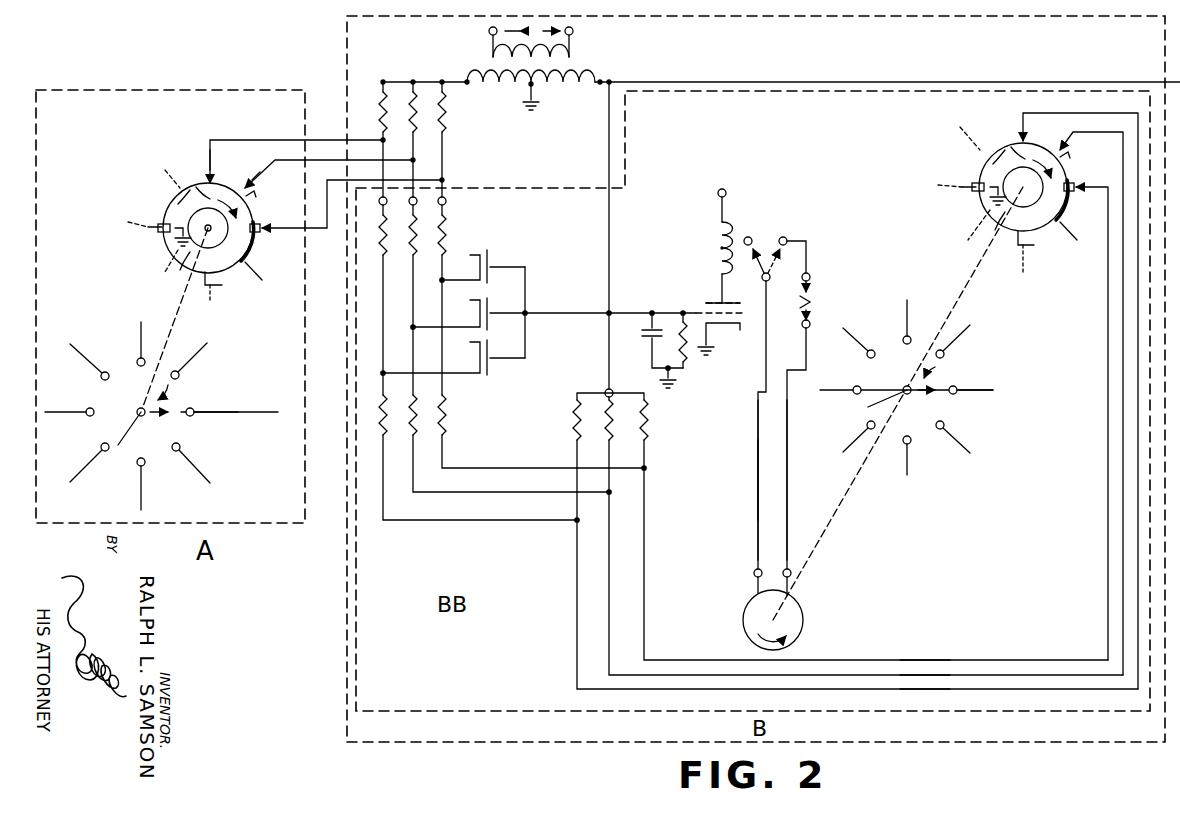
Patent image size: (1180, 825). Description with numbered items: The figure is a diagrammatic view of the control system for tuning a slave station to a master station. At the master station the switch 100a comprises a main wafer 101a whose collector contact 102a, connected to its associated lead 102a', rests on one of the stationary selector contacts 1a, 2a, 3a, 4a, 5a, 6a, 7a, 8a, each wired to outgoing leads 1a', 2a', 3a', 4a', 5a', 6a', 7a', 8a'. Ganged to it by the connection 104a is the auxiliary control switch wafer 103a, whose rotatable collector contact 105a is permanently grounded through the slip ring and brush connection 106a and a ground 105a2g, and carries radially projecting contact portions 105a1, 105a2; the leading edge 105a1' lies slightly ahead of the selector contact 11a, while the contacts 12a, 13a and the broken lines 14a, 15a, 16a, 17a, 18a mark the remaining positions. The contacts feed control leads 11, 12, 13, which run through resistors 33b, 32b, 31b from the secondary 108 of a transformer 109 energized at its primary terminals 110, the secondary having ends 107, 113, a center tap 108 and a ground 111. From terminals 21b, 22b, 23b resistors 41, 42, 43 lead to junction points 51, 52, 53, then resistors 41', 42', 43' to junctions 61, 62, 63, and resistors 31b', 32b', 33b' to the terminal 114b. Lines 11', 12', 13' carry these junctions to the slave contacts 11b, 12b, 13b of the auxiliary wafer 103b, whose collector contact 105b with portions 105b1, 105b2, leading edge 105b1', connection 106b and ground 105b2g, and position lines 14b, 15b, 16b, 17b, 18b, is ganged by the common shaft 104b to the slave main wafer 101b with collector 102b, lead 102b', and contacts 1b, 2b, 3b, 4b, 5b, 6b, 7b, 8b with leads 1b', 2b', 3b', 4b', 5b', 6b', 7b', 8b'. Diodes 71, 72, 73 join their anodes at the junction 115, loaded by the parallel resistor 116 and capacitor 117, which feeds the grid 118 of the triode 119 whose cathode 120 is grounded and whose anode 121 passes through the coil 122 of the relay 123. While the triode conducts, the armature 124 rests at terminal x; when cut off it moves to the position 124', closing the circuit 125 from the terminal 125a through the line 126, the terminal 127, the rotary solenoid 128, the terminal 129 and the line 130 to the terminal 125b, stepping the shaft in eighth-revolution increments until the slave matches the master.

The transformer 109 is at (578, 66).
The primary winding AC terminals 110 is at (573, 36).
The secondary end 107 is at (466, 78).
The secondary end 113 is at (602, 80).
The secondary 108 is at (517, 100).
The ground 111 is at (535, 104).
The resistor 33b is at (368, 139).
The resistor 32b is at (427, 139).
The resistor 31b is at (460, 139).
The control lead 13 is at (297, 149).
The control lead 12 is at (330, 163).
The control lead 11 is at (353, 194).
The terminal 23b is at (390, 204).
The terminal 22b is at (419, 204).
The terminal 21b is at (446, 201).
The resistor 43 is at (393, 305).
The resistor 42 is at (423, 305).
The resistor 41 is at (457, 305).
The junction point 51 is at (449, 279).
The diode 71 is at (489, 253).
The junction 52 is at (418, 324).
The diode 72 is at (478, 299).
The junction 53 is at (386, 370).
The diode 73 is at (482, 382).
The junction 115 is at (527, 312).
The resistor 43' is at (479, 453).
The resistor 42' is at (510, 441).
The resistor 41' is at (542, 432).
The terminal 114b is at (606, 388).
The resistor 33b' is at (855, 544).
The resistor 32b' is at (864, 537).
The resistor 31b' is at (874, 530).
The junction 61 is at (645, 468).
The junction 62 is at (612, 494).
The junction 63 is at (578, 522).
The relay 123 is at (734, 220).
The relay coil 122 is at (719, 232).
The triode 119 is at (700, 266).
The anode 121 is at (714, 292).
The grid 118 is at (708, 308).
The cathode 120 is at (738, 330).
The capacitor 117 is at (645, 333).
The resistor 116 is at (689, 358).
The relay armature 124 is at (749, 402).
The alternate armature position 124' is at (787, 271).
The terminal 125a is at (809, 276).
The terminal 125b is at (810, 326).
The circuit 125 is at (756, 436).
The line 126 is at (756, 478).
The line 130 is at (789, 484).
The solenoid terminal 127 is at (754, 570).
The solenoid terminal 129 is at (786, 568).
The rotary solenoid 128 is at (752, 634).
The auxiliary control switch wafer 103a is at (123, 186).
The radially projecting contact portion 105a1 is at (273, 242).
The leading edge 105a1' is at (276, 200).
The radially projecting contact portion 105a2 is at (188, 192).
The slip ring and brush connection 106a is at (193, 191).
The collector contact 105a is at (182, 272).
The broken line 14a is at (166, 168).
The broken line 16a is at (164, 270).
The broken line 15a is at (128, 222).
The selector contact 11a is at (276, 216).
The selector contact 13a is at (207, 140).
The selector contact 12a is at (262, 170).
The broken line 18a is at (262, 274).
The broken line 17a is at (222, 298).
The ganging connection 104a is at (184, 320).
The ground connection 105a2g is at (183, 237).
The rotary switch hub 102a' is at (189, 404).
The collector contact 102a is at (146, 428).
The selector contact 1a is at (205, 398).
The outgoing lead 1a' is at (222, 423).
The selector contact 2a is at (180, 360).
The outgoing lead 2a' is at (207, 357).
The selector contact 3a is at (124, 354).
The outgoing lead 3a' is at (123, 340).
The selector contact 4a is at (88, 375).
The outgoing lead 4a' is at (83, 346).
The selector contact 5a is at (72, 422).
The outgoing lead 5a' is at (65, 399).
The selector contact 6a is at (113, 462).
The outgoing lead 6a' is at (79, 465).
The selector contact 7a is at (154, 473).
The outgoing lead 7a' is at (120, 488).
The selector contact 8a is at (195, 445).
The outgoing lead 8a' is at (195, 475).
The main wafer 101a is at (225, 468).
The switch 100a is at (273, 385).
The auxiliary wafer 103b is at (943, 178).
The radially projecting contact portion 105b1 is at (1055, 222).
The leading edge 105b1' is at (1091, 157).
The radially projecting contact portion 105b2 is at (1000, 153).
The slip ring and brush connection 106b is at (1008, 146).
The collector contact 105b is at (1012, 240).
The broken line 14b is at (962, 134).
The broken line 16b is at (972, 236).
The broken line 15b is at (940, 184).
The contact 11b is at (1094, 186).
The contact 12b is at (1078, 140).
The contact 13b is at (1022, 116).
The broken line 18b is at (1068, 224).
The broken line 17b is at (1028, 270).
The common shaft 104b is at (976, 292).
The ground connection 105b2g is at (998, 196).
The rotary switch hub 102b' is at (925, 382).
The collector contact 102b is at (904, 406).
The selector contact 1b is at (972, 380).
The outgoing lead 1b' is at (982, 403).
The selector contact 2b is at (957, 355).
The outgoing lead 2b' is at (970, 338).
The selector contact 3b is at (916, 331).
The outgoing lead 3b' is at (891, 312).
The selector contact 4b is at (874, 341).
The outgoing lead 4b' is at (844, 344).
The selector contact 5b is at (844, 380).
The outgoing lead 5b' is at (829, 403).
The selector contact 6b is at (857, 419).
The outgoing lead 6b' is at (841, 440).
The selector contact 7b is at (893, 451).
The outgoing lead 7b' is at (888, 469).
The selector contact 8b is at (958, 430).
The outgoing lead 8b' is at (957, 451).
The main wafer 101b is at (985, 470).
The line 11' is at (913, 646).
The line 12' is at (899, 667).
The line 13' is at (912, 696).